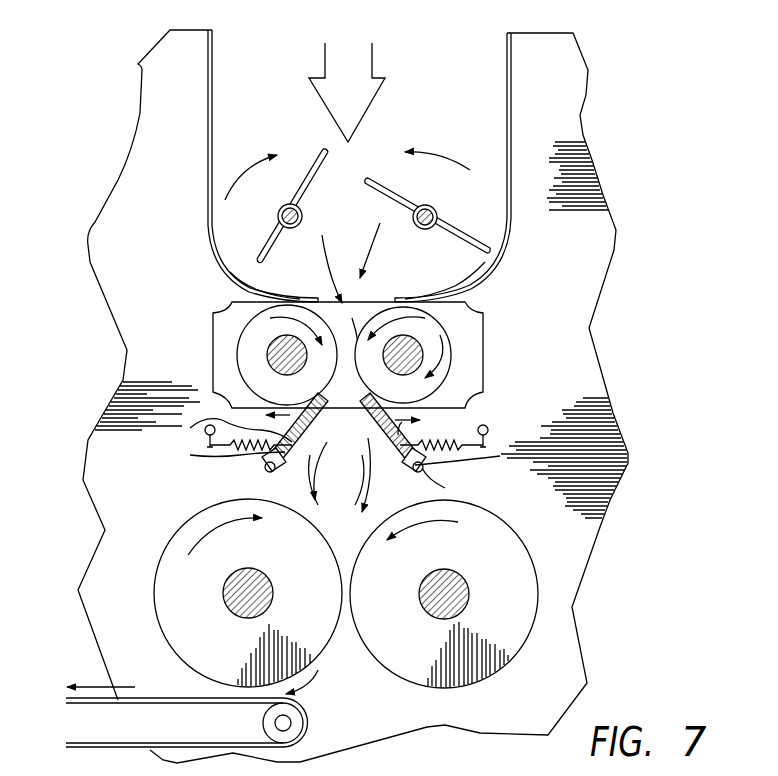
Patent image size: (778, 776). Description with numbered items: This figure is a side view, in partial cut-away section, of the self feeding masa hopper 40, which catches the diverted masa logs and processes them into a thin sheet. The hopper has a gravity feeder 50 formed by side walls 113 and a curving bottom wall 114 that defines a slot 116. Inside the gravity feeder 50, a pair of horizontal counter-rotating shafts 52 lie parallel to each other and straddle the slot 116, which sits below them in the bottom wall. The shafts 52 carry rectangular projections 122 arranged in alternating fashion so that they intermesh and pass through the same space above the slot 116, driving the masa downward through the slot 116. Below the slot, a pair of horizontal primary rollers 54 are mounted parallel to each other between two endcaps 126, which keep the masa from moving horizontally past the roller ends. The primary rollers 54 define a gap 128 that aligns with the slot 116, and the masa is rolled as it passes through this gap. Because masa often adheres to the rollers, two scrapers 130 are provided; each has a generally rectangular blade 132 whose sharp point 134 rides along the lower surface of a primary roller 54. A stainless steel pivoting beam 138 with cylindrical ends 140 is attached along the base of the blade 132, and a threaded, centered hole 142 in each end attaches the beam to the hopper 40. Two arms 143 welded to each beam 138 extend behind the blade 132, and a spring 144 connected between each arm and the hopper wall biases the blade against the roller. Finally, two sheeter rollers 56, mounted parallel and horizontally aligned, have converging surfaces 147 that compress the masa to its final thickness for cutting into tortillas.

The self feeding masa hopper 40 is at (667, 262).
The gravity feeder 50 is at (513, 83).
The horizontal counter-rotating shafts 52 is at (278, 218).
The primary rollers 54 is at (236, 352).
The sheeter rollers 56 is at (153, 612).
The side walls 113 is at (580, 110).
The curving bottom wall 114 is at (255, 284).
The slot 116 is at (375, 290).
The rectangular projections 122 is at (258, 262).
The endcaps 126 is at (214, 330).
The gap 128 is at (328, 290).
The scrapers 130 is at (258, 475).
The blade 132 is at (342, 475).
The sharp point 134 is at (213, 383).
The pivoting beam 138 is at (425, 468).
The cylindrical ends 140 is at (430, 485).
The threaded centered hole 142 is at (265, 478).
The arms 143 is at (202, 425).
The spring 144 is at (195, 455).
The converging surfaces 147 is at (336, 480).